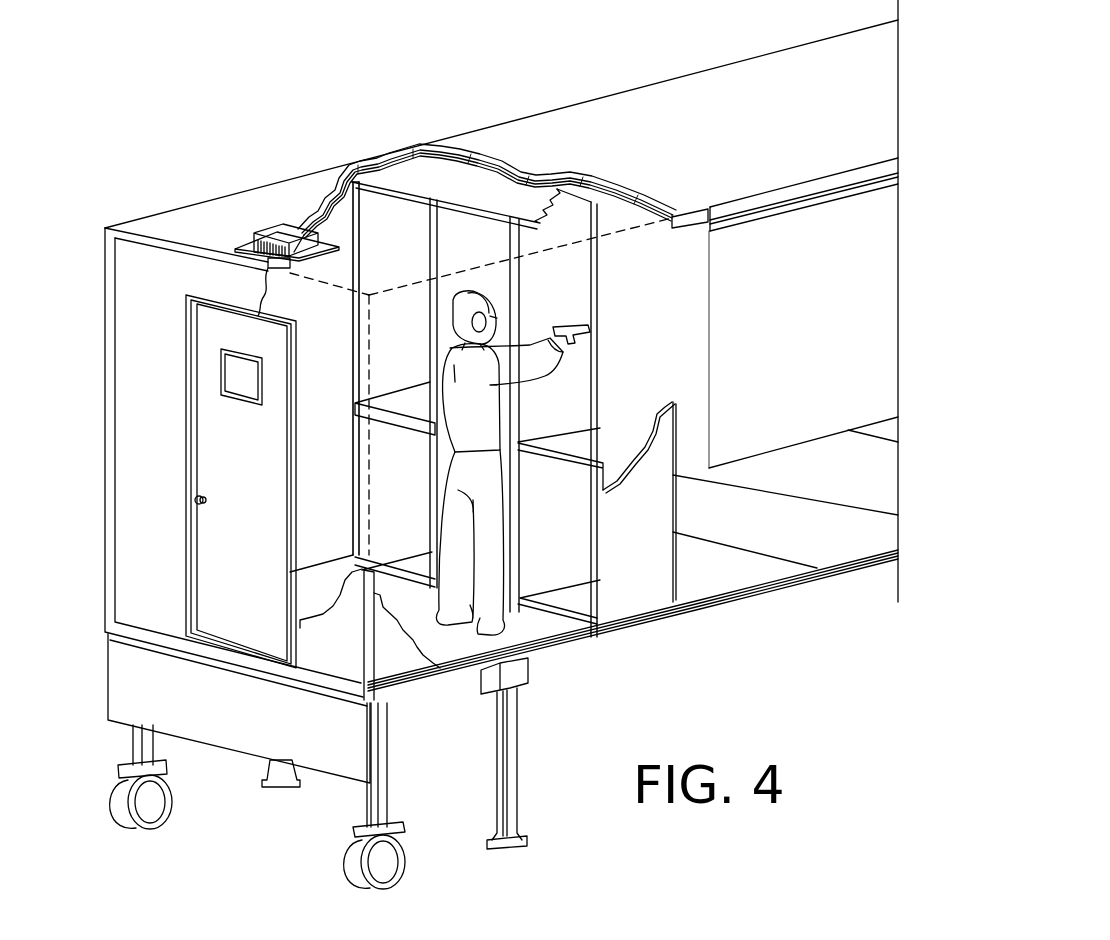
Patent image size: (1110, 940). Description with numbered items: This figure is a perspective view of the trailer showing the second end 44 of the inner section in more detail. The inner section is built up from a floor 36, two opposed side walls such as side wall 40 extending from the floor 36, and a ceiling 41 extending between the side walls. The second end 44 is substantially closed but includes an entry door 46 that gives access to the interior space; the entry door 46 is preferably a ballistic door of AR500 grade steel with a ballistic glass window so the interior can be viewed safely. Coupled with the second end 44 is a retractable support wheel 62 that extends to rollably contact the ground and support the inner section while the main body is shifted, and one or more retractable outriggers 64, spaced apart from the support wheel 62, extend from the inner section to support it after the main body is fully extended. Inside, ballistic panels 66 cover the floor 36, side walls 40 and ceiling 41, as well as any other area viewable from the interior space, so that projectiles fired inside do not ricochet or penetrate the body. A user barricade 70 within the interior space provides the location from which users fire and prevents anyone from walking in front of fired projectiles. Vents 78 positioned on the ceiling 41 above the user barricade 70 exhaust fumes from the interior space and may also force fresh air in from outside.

The floor 36 is at (725, 575).
The side wall 40 is at (395, 658).
The ceiling 41 is at (177, 228).
The second end 44 is at (143, 562).
The entry door 46 is at (220, 428).
The retractable support wheel 62 is at (108, 810).
The retractable outrigger 64 is at (512, 728).
The ballistic panel 66 is at (688, 222).
The user barricade 70 is at (592, 446).
The vent 78 is at (253, 236).